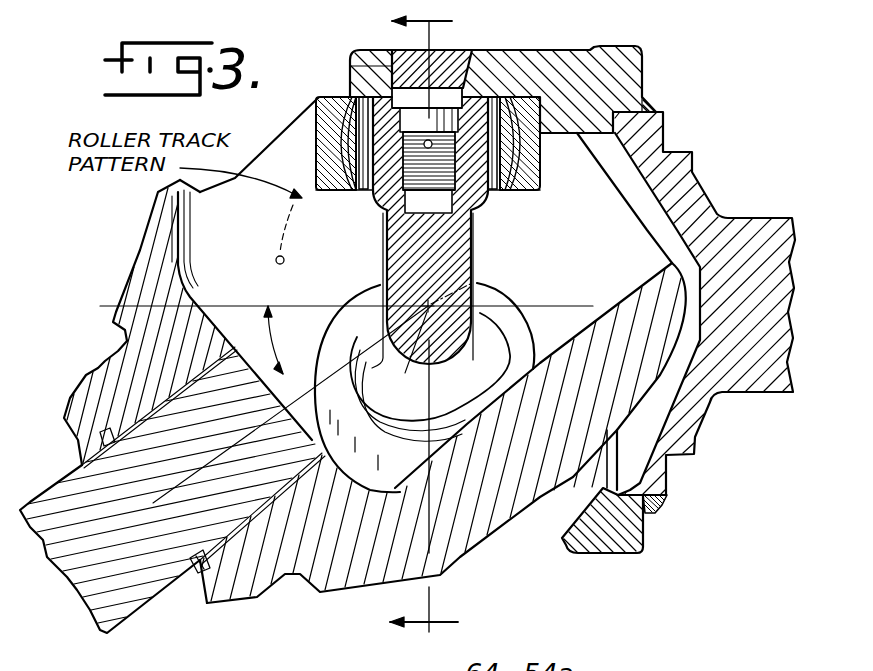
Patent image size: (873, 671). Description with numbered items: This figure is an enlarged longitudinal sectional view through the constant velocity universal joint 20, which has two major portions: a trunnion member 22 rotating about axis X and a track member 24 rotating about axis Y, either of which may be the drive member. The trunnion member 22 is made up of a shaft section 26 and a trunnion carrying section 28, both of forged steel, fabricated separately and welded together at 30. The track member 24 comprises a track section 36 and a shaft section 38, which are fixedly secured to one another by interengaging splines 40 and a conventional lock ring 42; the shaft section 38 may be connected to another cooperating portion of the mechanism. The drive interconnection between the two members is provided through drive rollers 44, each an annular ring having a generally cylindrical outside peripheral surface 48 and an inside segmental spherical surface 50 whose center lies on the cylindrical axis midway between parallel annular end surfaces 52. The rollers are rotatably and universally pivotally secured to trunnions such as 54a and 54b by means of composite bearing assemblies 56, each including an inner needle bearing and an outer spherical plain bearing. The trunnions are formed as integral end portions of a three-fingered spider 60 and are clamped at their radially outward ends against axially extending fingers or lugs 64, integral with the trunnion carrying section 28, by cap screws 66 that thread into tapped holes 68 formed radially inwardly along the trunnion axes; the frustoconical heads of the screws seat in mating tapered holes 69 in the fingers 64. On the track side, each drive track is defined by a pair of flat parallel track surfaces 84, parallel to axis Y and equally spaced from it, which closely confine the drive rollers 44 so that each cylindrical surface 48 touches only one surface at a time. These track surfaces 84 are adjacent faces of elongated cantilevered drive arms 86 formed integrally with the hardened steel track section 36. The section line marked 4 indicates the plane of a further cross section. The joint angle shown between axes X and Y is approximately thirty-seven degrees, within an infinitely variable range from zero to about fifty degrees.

The section line 4- 4 is at (433, 325).
The constant velocity universal joint 20 is at (670, 92).
The trunnion member 22 is at (598, 49).
The track member 24 is at (136, 267).
The shaft section 26 is at (760, 218).
The trunnion carrying section 28 is at (604, 553).
The weld 30 is at (655, 514).
The track section 36 is at (458, 553).
The shaft section 38 is at (101, 632).
The interengaging splines 40 is at (82, 434).
The lock ring 42 is at (193, 575).
The drive rollers 44 is at (314, 143).
The cylindrical outside peripheral surface 48 is at (540, 150).
The inside segmental spherical surface 50 is at (514, 170).
The annular end surfaces 52 is at (345, 118).
The trunnion 54a is at (481, 94).
The trunnion 54b is at (506, 343).
The composite bearing assemblies 56 is at (515, 194).
The three-fingered spider 60 is at (470, 286).
The fingers or lugs 64 is at (390, 58).
The cap screws 66 is at (394, 84).
The tapped holes 68 is at (384, 222).
The tapered holes 69 is at (350, 66).
The track surfaces 84 is at (227, 222).
The cantilevered drive arms 86 is at (520, 465).